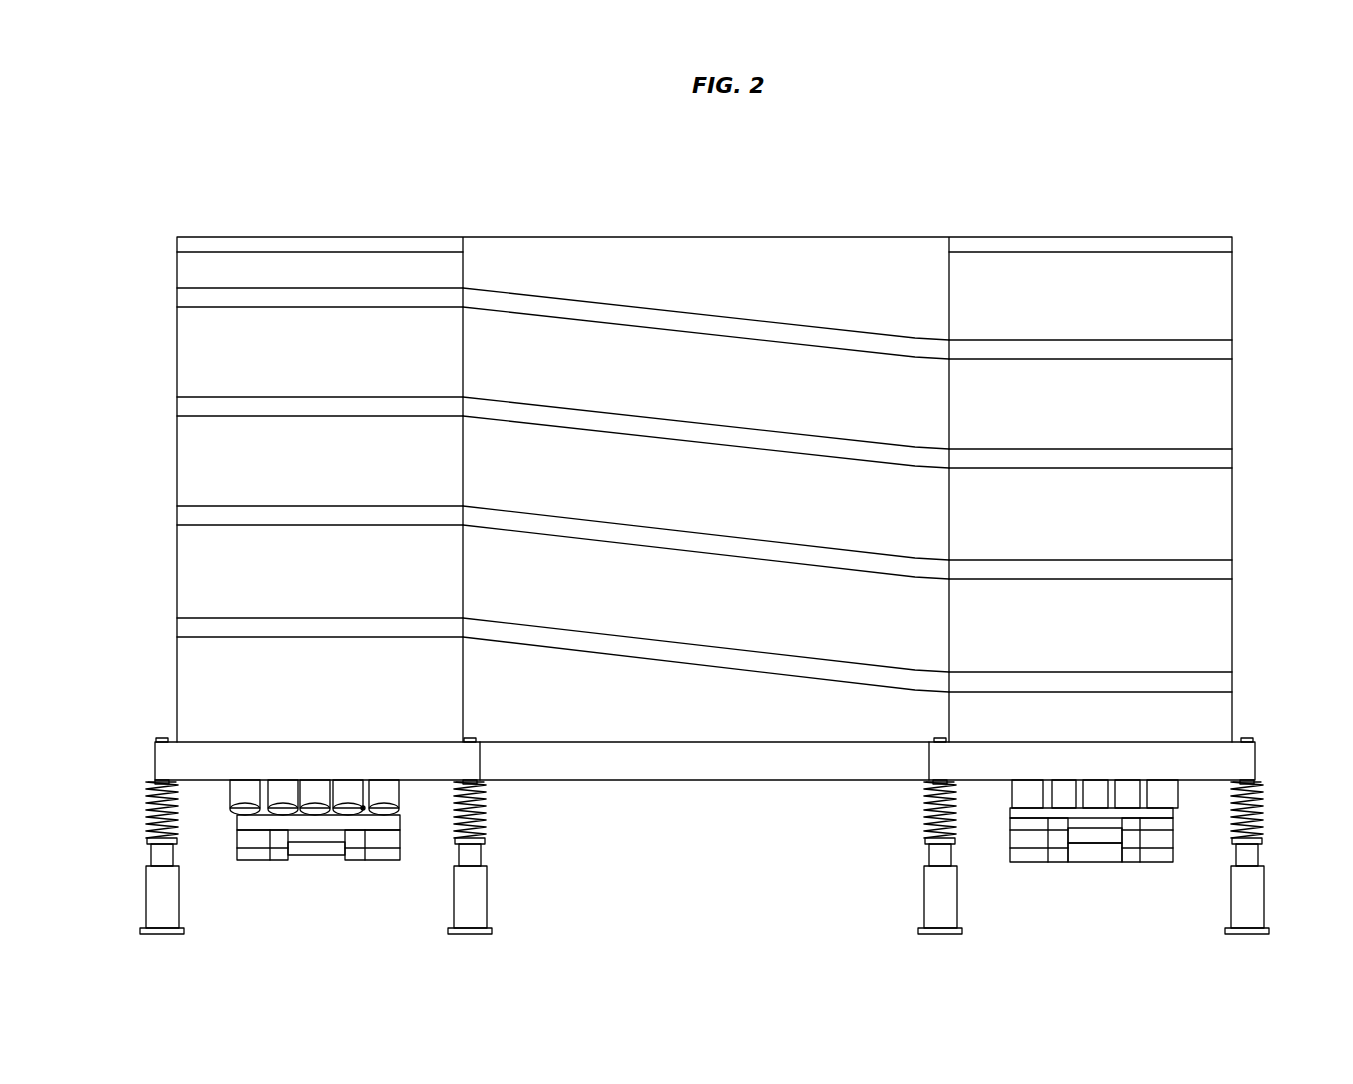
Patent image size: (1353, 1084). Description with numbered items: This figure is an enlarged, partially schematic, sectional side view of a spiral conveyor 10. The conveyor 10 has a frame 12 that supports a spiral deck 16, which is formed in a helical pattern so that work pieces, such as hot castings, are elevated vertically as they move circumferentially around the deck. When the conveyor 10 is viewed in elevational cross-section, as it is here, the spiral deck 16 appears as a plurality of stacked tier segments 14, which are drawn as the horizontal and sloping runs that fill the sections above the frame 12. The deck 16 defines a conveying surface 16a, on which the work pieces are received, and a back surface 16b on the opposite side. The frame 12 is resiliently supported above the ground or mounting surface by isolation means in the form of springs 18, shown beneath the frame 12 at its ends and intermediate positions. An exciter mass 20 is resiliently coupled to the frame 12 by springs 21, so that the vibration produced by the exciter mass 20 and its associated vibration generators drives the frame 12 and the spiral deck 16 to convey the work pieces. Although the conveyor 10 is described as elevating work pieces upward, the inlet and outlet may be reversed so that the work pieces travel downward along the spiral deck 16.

The spiral conveyor 10 is at (1047, 194).
The frame 12 is at (186, 757).
The tier segments 14 is at (1200, 339).
The spiral deck 16 is at (358, 288).
The conveying surface 16a is at (250, 286).
The back surface 16b is at (203, 289).
The springs 18 is at (146, 800).
The exciter mass 20 is at (250, 845).
The springs 21 is at (350, 797).